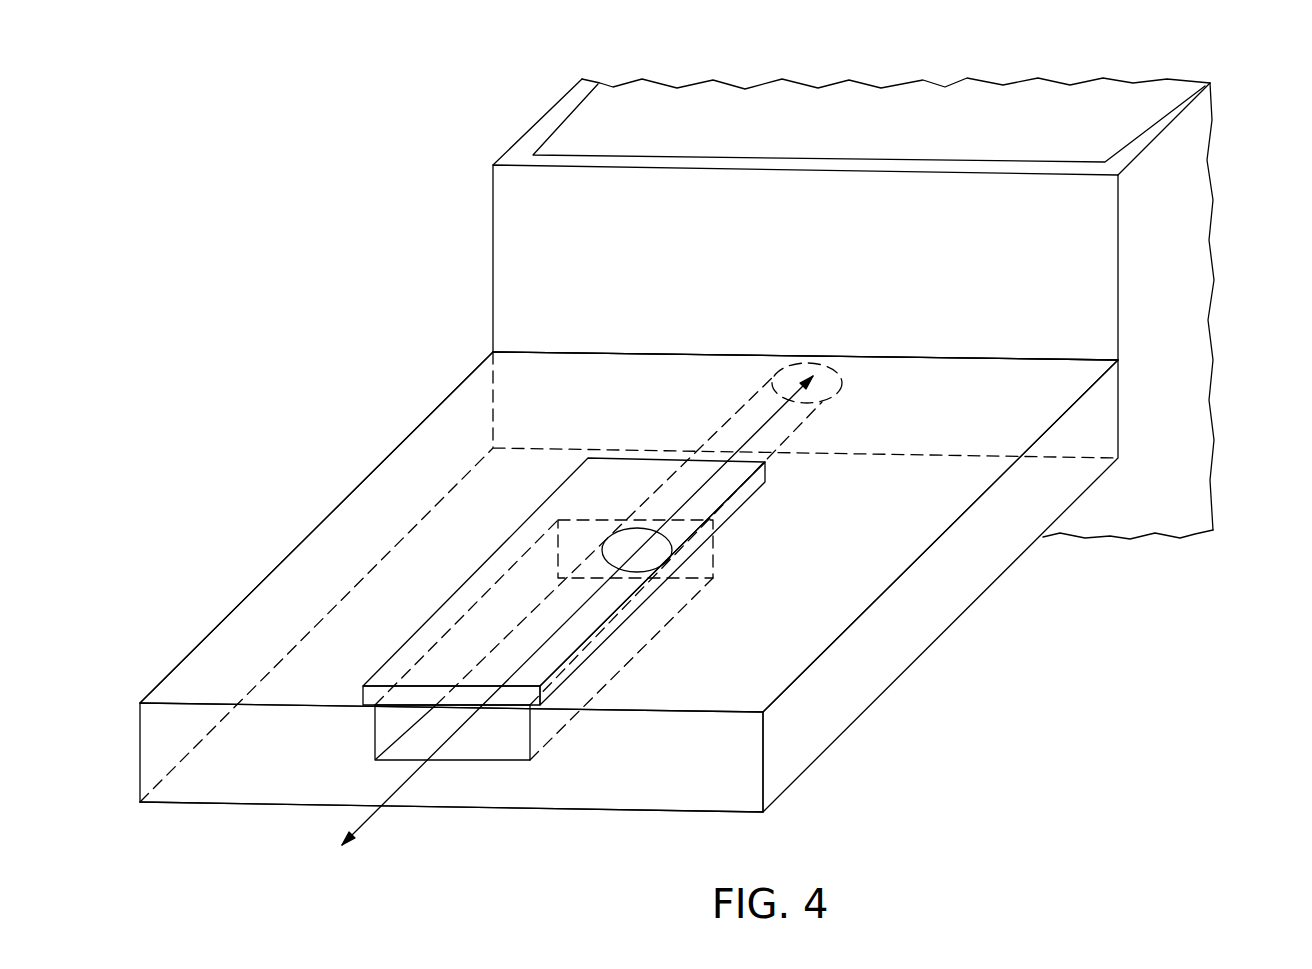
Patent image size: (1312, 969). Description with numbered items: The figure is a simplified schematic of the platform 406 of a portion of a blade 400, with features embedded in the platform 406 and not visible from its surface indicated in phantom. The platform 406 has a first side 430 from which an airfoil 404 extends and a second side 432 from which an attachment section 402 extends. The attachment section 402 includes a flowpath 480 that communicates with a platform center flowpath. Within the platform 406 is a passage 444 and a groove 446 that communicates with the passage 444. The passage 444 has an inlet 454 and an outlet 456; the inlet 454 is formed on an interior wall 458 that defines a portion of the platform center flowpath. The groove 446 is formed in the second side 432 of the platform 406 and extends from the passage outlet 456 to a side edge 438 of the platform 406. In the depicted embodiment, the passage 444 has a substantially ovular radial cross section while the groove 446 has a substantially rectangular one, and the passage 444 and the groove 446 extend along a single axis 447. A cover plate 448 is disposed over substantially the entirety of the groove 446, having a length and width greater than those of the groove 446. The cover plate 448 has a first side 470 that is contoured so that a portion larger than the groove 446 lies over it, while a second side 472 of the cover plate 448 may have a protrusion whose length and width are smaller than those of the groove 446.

The blade 400 is at (518, 240).
The attachment section 402 is at (1183, 212).
The airfoil 404 is at (1108, 513).
The platform 406 is at (367, 475).
The first side 430 is at (537, 810).
The second side 432 is at (280, 582).
The side edge 438 is at (643, 767).
The passage 444 is at (722, 432).
The groove 446 is at (650, 622).
The single axis 447 is at (368, 822).
The cover plate 448 is at (733, 507).
The inlet 454 is at (820, 362).
The outlet 456 is at (603, 538).
The interior wall 458 is at (998, 372).
The first side 470 is at (457, 643).
The second side 472 is at (385, 708).
The flowpath 480 is at (950, 122).